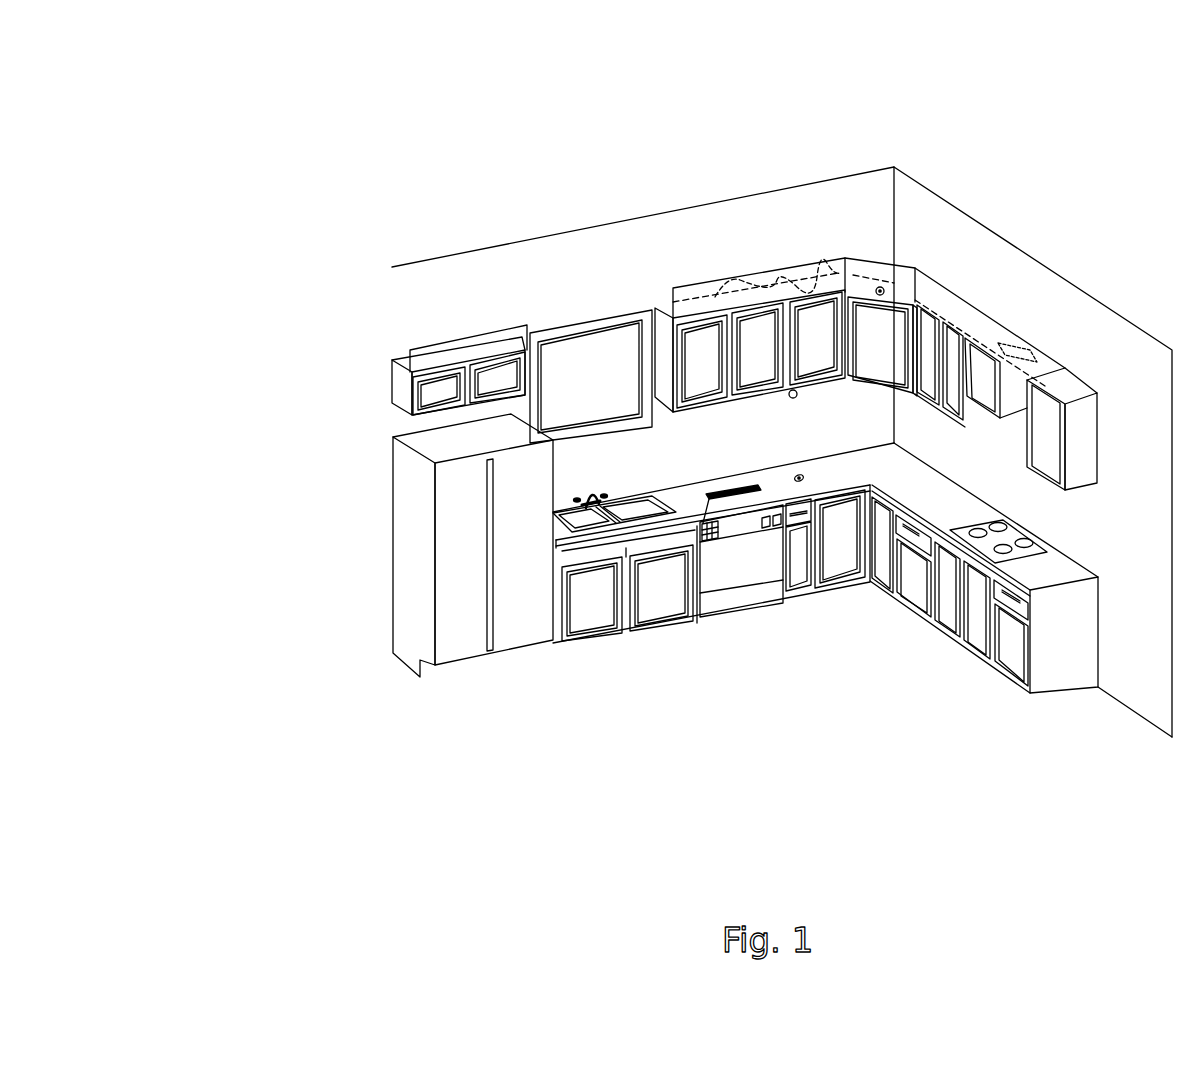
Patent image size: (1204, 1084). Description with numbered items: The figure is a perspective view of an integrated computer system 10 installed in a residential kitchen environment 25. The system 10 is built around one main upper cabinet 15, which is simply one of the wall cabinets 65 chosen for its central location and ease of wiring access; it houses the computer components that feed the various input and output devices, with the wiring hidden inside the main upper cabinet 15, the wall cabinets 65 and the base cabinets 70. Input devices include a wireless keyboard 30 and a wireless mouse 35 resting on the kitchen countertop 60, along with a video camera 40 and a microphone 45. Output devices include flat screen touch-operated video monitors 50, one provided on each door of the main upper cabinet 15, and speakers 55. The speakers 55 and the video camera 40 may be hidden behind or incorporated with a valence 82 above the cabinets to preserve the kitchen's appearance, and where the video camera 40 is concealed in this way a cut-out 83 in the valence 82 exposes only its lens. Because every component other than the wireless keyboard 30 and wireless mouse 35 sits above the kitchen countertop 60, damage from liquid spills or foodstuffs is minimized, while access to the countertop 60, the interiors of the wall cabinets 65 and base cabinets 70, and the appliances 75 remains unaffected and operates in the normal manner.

The integrated computer system 10 is at (305, 204).
The main upper cabinet 15 is at (775, 267).
The residential kitchen environment 25 is at (753, 730).
The wireless keyboard 30 is at (692, 560).
The wireless mouse 35 is at (799, 483).
The video camera 40 is at (884, 275).
The microphone 45 is at (787, 303).
The flat screen touch-operated video monitor 50 is at (702, 352).
The speaker 55 is at (832, 263).
The kitchen countertop 60 is at (920, 508).
The wall cabinet 65 is at (440, 375).
The base cabinet 70 is at (592, 608).
The appliance 75 is at (452, 622).
The valence 82 is at (410, 350).
The cut-out 83 is at (879, 286).